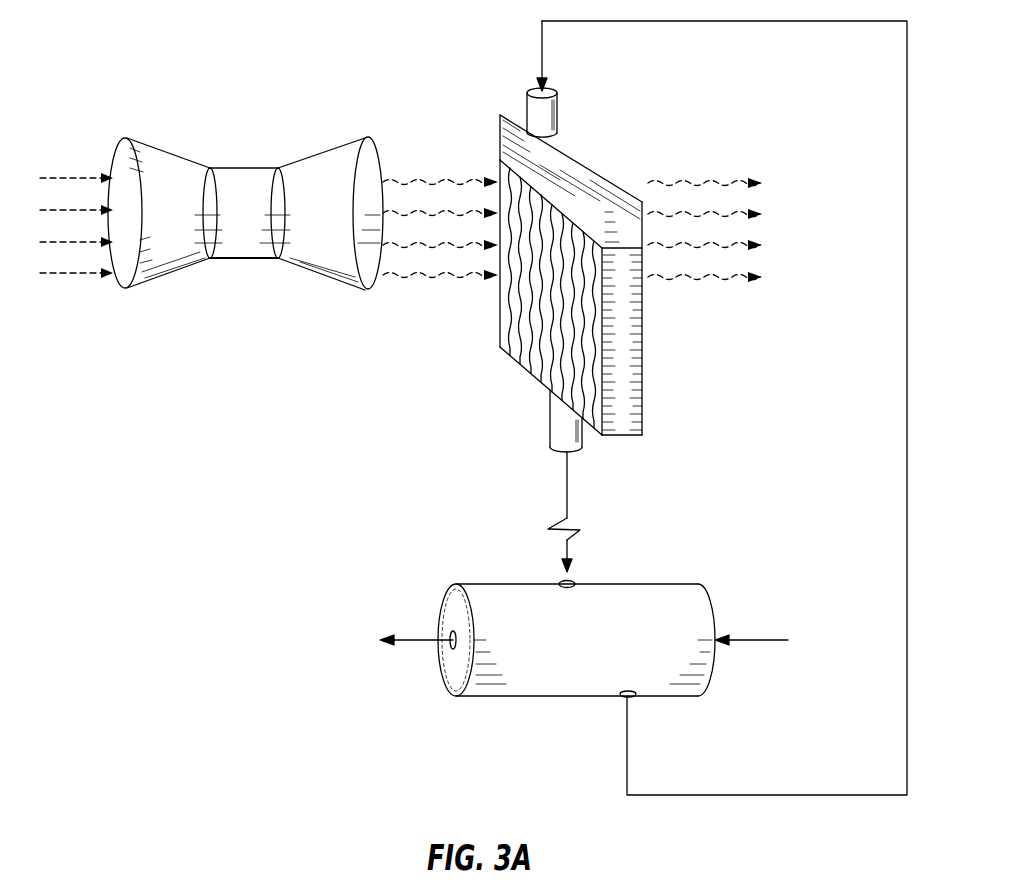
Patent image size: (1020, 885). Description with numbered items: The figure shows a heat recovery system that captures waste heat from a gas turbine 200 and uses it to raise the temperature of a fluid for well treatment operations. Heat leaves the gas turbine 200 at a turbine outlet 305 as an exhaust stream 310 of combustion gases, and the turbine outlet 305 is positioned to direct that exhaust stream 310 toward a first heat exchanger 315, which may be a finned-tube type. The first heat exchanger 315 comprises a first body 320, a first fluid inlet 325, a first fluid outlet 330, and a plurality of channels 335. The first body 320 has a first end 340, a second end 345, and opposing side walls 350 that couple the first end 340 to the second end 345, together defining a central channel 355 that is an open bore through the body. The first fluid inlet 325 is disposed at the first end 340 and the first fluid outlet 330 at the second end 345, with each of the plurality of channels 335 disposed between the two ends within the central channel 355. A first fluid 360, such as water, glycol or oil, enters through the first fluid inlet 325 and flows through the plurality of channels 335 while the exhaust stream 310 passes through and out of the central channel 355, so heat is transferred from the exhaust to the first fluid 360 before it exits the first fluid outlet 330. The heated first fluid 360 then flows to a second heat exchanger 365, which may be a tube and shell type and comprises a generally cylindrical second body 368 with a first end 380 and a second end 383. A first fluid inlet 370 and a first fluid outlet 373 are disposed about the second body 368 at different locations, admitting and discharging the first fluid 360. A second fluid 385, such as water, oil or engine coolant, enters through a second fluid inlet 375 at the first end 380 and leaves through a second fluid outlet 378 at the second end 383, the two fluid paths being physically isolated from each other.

The gas turbine 200 is at (245, 186).
The turbine outlet 305 is at (333, 317).
The exhaust stream 310 is at (407, 195).
The first heat exchanger 315 is at (601, 280).
The first body 320 is at (585, 275).
The first fluid inlet 325 is at (585, 108).
The first fluid outlet 330 is at (609, 435).
The plurality of channels 335 is at (512, 298).
The first end 340 is at (573, 167).
The second end 345 is at (509, 291).
The opposing side walls 350 is at (658, 318).
The central channel 355 is at (510, 275).
The first fluid 360 is at (679, 408).
The second heat exchanger 365 is at (601, 652).
The second body 368 is at (578, 570).
The first fluid inlet 370 is at (533, 568).
The first fluid outlet 373 is at (662, 713).
The second fluid inlet 375 is at (748, 640).
The second fluid outlet 378 is at (418, 621).
The first end 380 is at (626, 624).
The second end 383 is at (442, 661).
The second fluid 385 is at (768, 625).